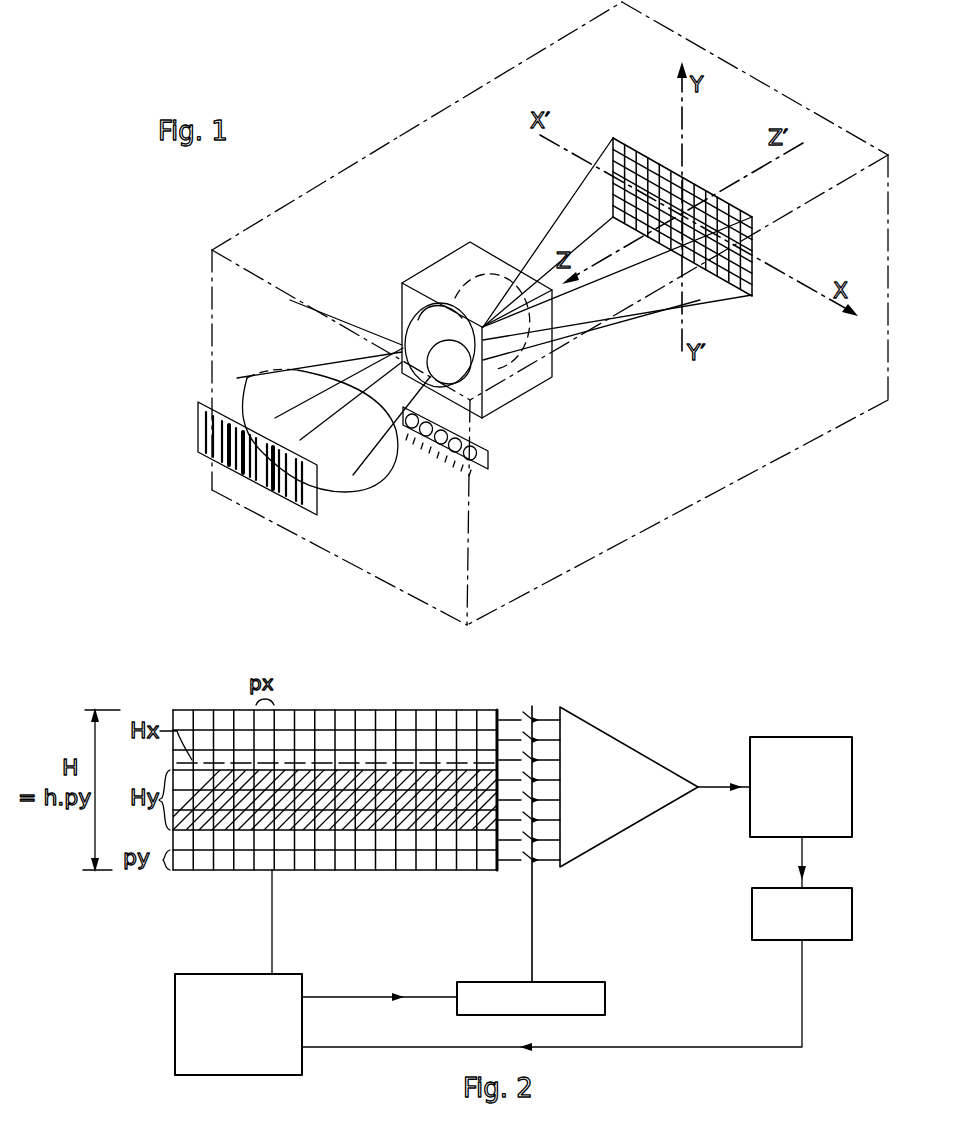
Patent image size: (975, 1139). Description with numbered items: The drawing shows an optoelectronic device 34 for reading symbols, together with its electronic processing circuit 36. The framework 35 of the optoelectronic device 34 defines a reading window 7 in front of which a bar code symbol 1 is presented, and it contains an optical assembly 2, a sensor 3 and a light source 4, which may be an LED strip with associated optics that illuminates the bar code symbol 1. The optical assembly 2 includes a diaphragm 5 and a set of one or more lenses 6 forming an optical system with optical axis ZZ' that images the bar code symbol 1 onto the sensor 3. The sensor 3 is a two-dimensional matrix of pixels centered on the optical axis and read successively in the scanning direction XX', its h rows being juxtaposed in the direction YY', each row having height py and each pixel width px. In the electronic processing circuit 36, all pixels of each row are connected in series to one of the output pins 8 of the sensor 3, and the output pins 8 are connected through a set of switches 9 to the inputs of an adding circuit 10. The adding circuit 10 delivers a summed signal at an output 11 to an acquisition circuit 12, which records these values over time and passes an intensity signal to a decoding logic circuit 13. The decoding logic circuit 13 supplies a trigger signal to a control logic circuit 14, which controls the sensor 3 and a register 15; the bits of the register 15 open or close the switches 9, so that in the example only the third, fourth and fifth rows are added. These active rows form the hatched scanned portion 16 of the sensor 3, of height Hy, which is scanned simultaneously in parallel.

In FIG. 1, the bar code symbol 1 is at (216, 478).
In FIG. 1, the optical assembly 2 is at (475, 304).
In FIG. 1, the sensor 3 is at (755, 228).
In FIG. 2, the sensor 3 is at (228, 872).
In FIG. 1, the light source 4 is at (491, 458).
In FIG. 1, the diaphragm 5 is at (400, 310).
In FIG. 1, the lenses 6 is at (548, 358).
In FIG. 1, the reading window 7 is at (392, 478).
In FIG. 2, the output pins 8 is at (507, 757).
In FIG. 2, the switches 9 is at (537, 704).
In FIG. 2, the adding circuit 10 is at (606, 752).
In FIG. 2, the output 11 is at (710, 786).
In FIG. 2, the acquisition circuit 12 is at (800, 752).
In FIG. 2, the decoding logic circuit 13 is at (762, 918).
In FIG. 2, the control logic circuit 14 is at (240, 998).
In FIG. 2, the register 15 is at (565, 983).
In FIG. 2, the scanned portion 16 is at (310, 830).
In FIG. 1, the optoelectronic device 34 is at (321, 160).
In FIG. 1, the framework 35 is at (478, 72).
In FIG. 2, the electronic processing circuit 36 is at (734, 652).